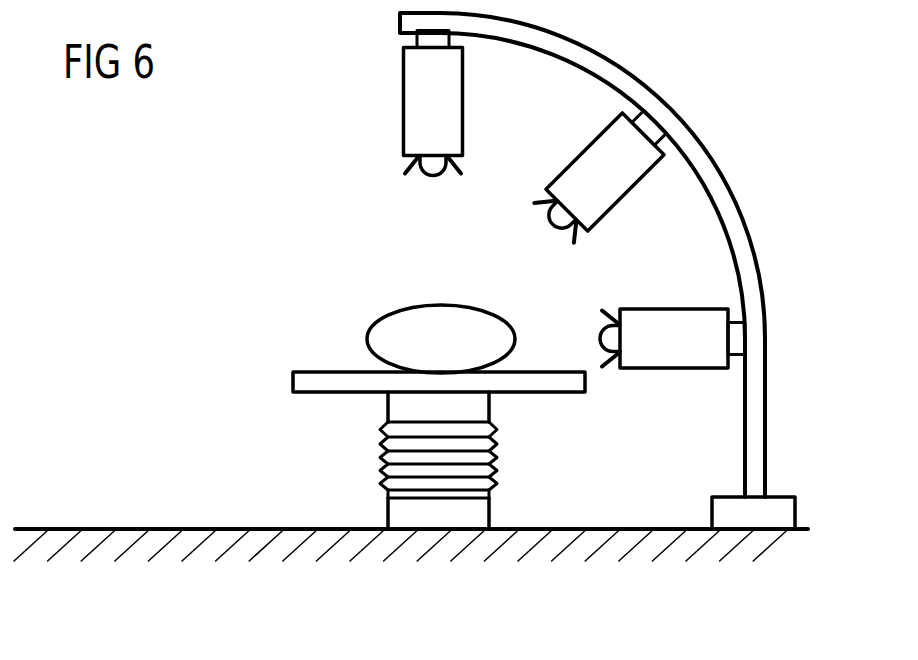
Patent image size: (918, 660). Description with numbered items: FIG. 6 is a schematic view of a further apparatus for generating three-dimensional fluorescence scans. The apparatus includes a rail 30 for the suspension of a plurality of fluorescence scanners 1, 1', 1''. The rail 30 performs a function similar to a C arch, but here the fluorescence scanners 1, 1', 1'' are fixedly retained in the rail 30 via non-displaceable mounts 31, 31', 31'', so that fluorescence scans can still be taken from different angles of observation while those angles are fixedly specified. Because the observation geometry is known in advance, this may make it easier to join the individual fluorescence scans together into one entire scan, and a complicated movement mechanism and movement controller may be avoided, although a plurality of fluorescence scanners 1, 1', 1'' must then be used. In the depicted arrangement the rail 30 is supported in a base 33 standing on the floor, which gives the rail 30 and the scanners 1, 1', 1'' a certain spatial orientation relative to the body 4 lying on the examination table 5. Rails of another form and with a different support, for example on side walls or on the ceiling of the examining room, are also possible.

The fluorescence scanner 1 is at (664, 309).
The fluorescence scanner 1' is at (598, 176).
The fluorescence scanner 1'' is at (409, 112).
The body 4 is at (414, 306).
The examination table 5 is at (293, 383).
The rail 30 is at (752, 432).
The mount 31 is at (771, 339).
The mount 31' is at (687, 111).
The mount 31'' is at (395, 42).
The base 33 is at (729, 496).